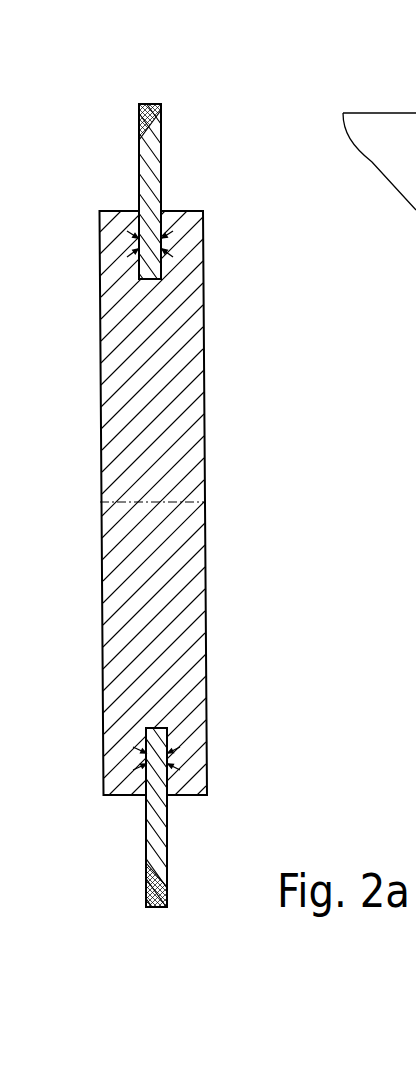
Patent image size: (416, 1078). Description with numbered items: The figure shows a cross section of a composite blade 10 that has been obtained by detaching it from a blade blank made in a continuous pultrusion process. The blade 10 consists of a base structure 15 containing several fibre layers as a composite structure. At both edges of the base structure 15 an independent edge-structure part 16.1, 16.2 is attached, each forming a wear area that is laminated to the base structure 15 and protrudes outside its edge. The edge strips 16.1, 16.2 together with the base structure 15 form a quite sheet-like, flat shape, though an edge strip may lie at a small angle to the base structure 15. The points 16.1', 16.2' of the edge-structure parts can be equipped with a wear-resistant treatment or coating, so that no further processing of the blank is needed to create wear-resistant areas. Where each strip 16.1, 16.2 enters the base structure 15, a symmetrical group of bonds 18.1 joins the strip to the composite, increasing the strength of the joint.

The blade 10 is at (234, 473).
The base structure 15 is at (175, 457).
The edge-structure part 16.1 is at (183, 159).
The point of edge-structure part 16.1' is at (117, 89).
The edge-structure part 16.2 is at (185, 817).
The point of edge-structure part 16.2' is at (109, 869).
The group of bonds 18.1 is at (177, 250).